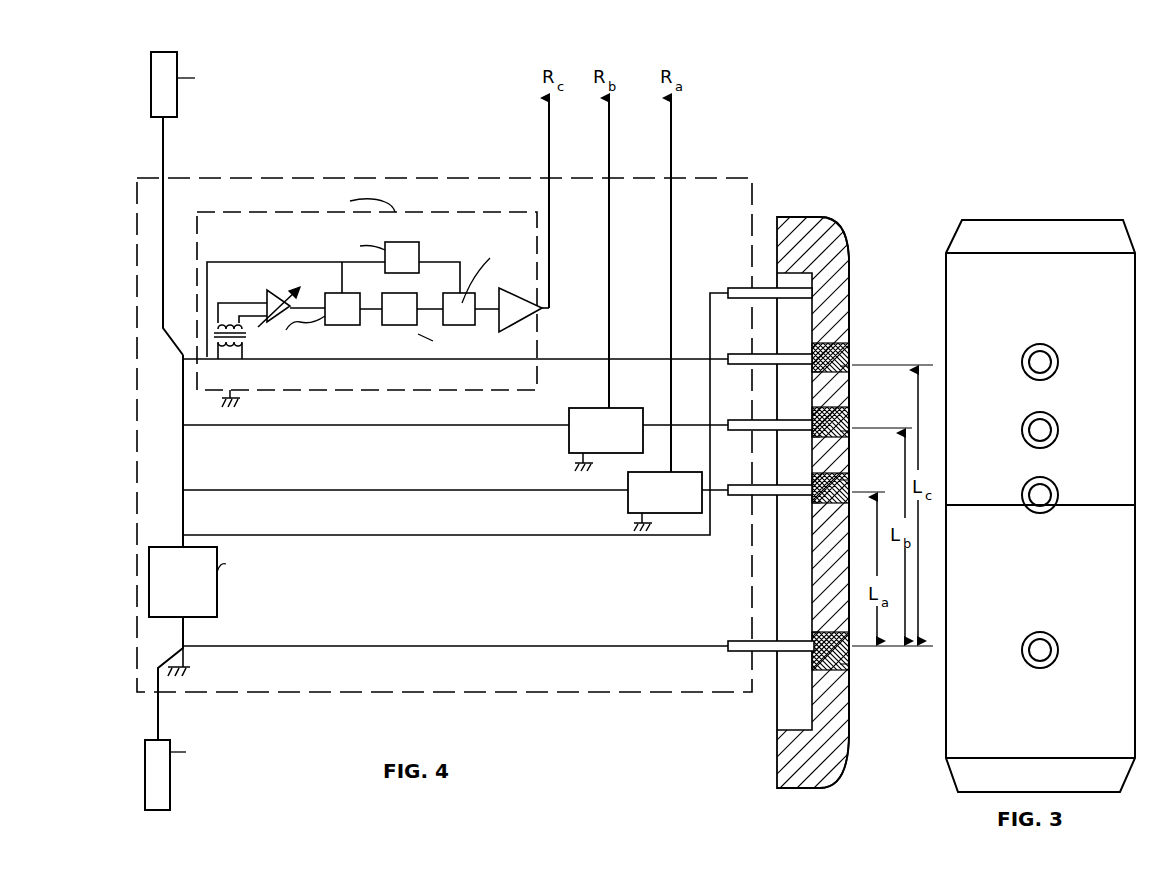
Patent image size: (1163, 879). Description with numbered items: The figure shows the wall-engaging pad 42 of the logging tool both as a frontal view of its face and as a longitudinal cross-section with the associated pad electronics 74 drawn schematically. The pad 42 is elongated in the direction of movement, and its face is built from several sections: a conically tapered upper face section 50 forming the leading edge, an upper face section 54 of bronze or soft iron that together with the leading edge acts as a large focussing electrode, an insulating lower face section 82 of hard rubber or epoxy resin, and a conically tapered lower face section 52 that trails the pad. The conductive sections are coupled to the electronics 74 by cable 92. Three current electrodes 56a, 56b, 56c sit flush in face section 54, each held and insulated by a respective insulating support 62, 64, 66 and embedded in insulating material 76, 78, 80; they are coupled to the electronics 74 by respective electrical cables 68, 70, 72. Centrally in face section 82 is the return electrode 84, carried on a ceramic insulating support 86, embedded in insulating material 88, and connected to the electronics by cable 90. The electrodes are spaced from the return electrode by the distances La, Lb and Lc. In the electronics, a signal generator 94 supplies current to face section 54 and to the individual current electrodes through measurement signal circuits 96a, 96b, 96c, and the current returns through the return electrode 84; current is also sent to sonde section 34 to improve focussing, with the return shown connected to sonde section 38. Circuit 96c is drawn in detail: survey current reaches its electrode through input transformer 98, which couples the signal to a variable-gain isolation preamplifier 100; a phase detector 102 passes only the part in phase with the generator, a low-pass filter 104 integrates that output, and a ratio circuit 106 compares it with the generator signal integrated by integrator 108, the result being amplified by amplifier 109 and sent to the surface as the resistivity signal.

In FIG. 4, the sonde section 34 is at (160, 90).
In FIG. 4, the sonde section 38 is at (155, 778).
In FIG. 4, the pad 42 is at (802, 217).
In FIG. 3, the pad 42 is at (965, 220).
In FIG. 4, the conically tapered upper face section 50 is at (840, 238).
In FIG. 3, the conically tapered upper face section 50 is at (1001, 250).
In FIG. 4, the conically tapered lower face section 52 is at (822, 774).
In FIG. 3, the conically tapered lower face section 52 is at (1014, 791).
In FIG. 4, the upper face section 54 is at (849, 288).
In FIG. 3, the upper face section 54 is at (1001, 302).
In FIG. 4, the current electrode 56a is at (849, 490).
In FIG. 3, the current electrode 56a is at (1027, 486).
In FIG. 4, the current electrode 56b is at (845, 427).
In FIG. 3, the current electrode 56b is at (1027, 420).
In FIG. 4, the current electrode 56c is at (842, 356).
In FIG. 3, the current electrode 56c is at (1028, 352).
In FIG. 4, the insulating support 62 is at (850, 378).
In FIG. 3, the insulating support 62 is at (1026, 498).
In FIG. 4, the insulating support 64 is at (850, 444).
In FIG. 3, the insulating support 64 is at (1026, 434).
In FIG. 4, the insulating support 66 is at (850, 478).
In FIG. 3, the insulating support 66 is at (1025, 366).
In FIG. 4, the electrical cable 68 is at (805, 354).
In FIG. 4, the electrical cable 70 is at (806, 420).
In FIG. 4, the electrical cable 72 is at (806, 485).
In FIG. 4, the pad electronics 74 is at (196, 210).
In FIG. 4, the insulating material 76 is at (812, 368).
In FIG. 4, the insulating material 78 is at (812, 433).
In FIG. 4, the insulating material 80 is at (812, 505).
In FIG. 4, the lower face section 82 is at (849, 705).
In FIG. 3, the lower face section 82 is at (1014, 550).
In FIG. 4, the return electrode 84 is at (849, 655).
In FIG. 3, the return electrode 84 is at (1030, 636).
In FIG. 4, the insulating support 86 is at (845, 666).
In FIG. 3, the insulating support 86 is at (1024, 660).
In FIG. 4, the insulating material 88 is at (802, 655).
In FIG. 4, the cable 90 is at (798, 640).
In FIG. 4, the cable 92 is at (760, 288).
In FIG. 4, the signal generator 94 is at (191, 593).
In FIG. 4, the measurement signal circuit 96a is at (682, 504).
In FIG. 4, the measurement signal circuit 96b is at (622, 441).
In FIG. 4, the measurement signal circuit 96c is at (367, 309).
In FIG. 4, the input transformer 98 is at (241, 331).
In FIG. 4, the variable-gain isolation preamplifier 100 is at (272, 300).
In FIG. 4, the phase detector 102 is at (344, 303).
In FIG. 4, the low-pass filter 104 is at (400, 316).
In FIG. 4, the ratio circuit 106 is at (452, 304).
In FIG. 4, the integrator 108 is at (407, 252).
In FIG. 4, the amplifier 109 is at (520, 314).